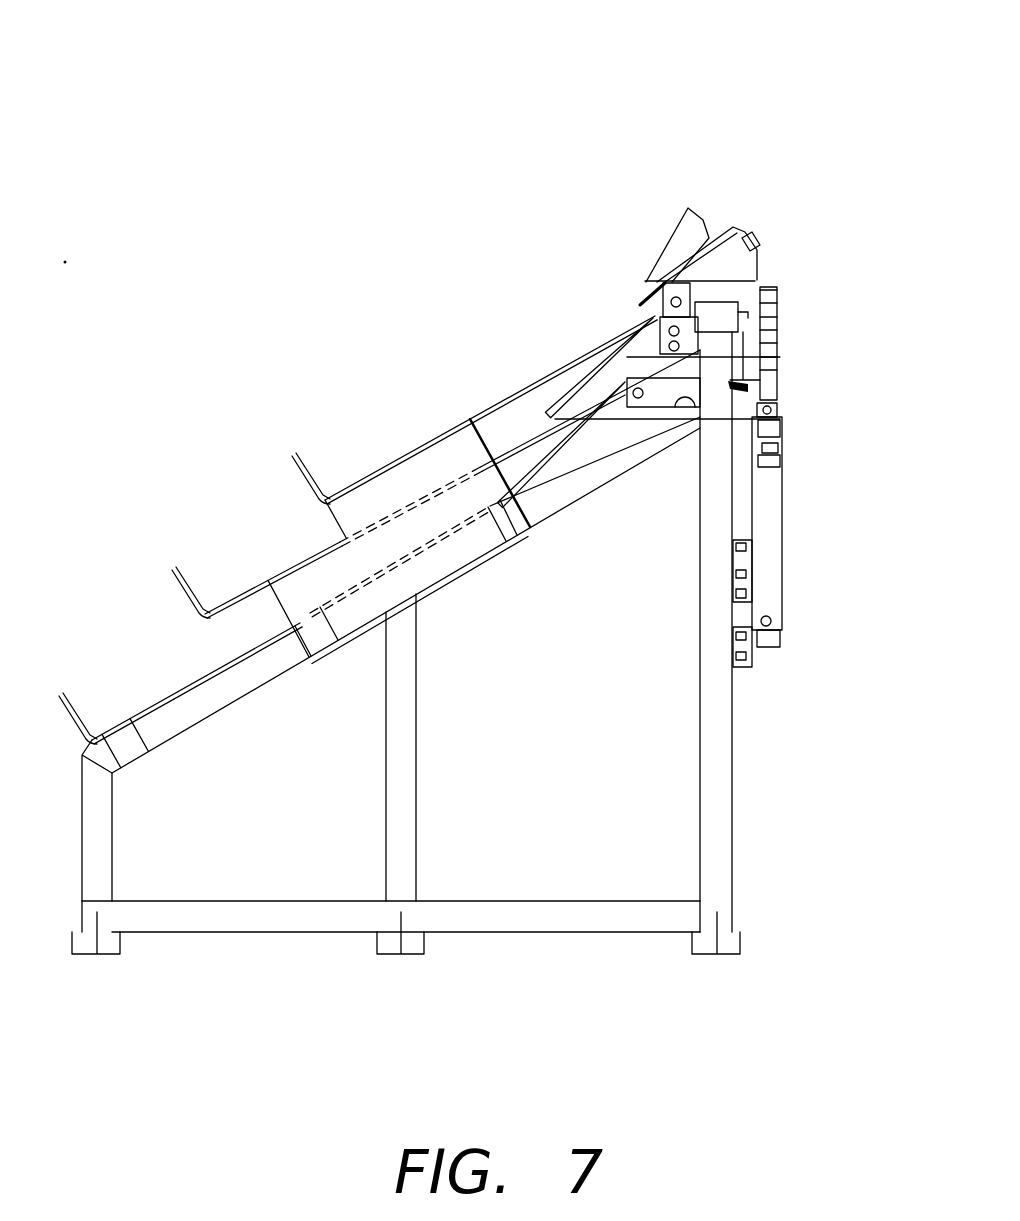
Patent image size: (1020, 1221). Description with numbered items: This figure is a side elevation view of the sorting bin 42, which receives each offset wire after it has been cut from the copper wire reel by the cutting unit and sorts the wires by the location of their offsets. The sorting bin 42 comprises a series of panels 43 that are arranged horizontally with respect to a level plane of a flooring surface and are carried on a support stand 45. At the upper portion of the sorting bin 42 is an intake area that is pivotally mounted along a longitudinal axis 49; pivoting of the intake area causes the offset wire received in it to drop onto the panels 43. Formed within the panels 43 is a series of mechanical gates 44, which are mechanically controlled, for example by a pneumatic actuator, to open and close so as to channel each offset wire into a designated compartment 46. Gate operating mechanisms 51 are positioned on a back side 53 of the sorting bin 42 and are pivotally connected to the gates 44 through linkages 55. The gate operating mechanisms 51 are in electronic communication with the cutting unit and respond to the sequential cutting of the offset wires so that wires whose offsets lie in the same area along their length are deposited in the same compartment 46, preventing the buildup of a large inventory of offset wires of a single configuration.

The sorting bin 42 is at (753, 128).
The panels 43 is at (432, 440).
The mechanical gates 44 is at (584, 345).
The support stand 45 is at (737, 800).
The compartment 46 is at (328, 497).
The longitudinal axis 49 is at (638, 288).
The gate operating mechanisms 51 is at (790, 528).
The back side 53 is at (737, 722).
The linkages 55 is at (748, 312).